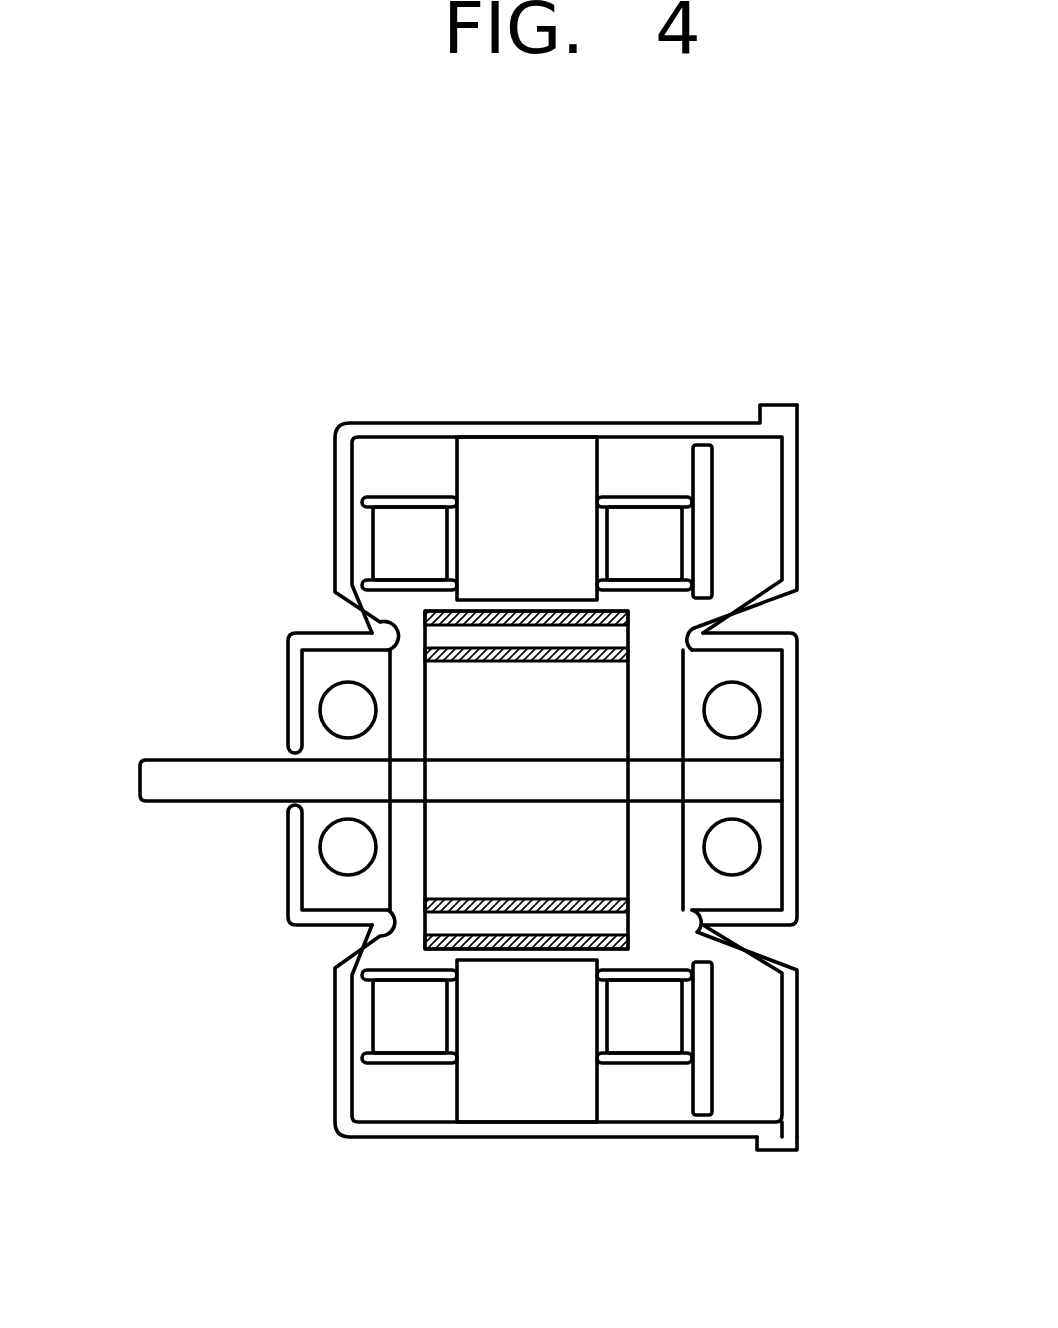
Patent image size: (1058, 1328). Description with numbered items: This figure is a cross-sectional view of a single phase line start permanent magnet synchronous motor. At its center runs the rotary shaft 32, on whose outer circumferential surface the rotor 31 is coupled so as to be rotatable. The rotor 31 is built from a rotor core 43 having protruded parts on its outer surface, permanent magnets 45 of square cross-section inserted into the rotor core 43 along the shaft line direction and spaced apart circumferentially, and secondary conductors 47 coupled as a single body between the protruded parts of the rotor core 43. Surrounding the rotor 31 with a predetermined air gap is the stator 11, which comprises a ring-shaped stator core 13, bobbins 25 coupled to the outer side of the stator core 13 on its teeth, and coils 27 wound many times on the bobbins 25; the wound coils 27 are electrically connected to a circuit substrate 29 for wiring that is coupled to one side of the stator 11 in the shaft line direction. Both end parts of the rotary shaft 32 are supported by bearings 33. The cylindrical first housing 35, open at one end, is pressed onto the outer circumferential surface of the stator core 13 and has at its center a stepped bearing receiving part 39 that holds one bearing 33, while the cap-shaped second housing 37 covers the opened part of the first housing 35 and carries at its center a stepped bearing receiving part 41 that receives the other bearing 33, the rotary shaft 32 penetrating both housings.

The stator 11 is at (527, 423).
The stator core 13 is at (500, 500).
The bobbin 25 is at (425, 500).
The coil 27 is at (400, 537).
The circuit substrate 29 is at (703, 462).
The rotor 31 is at (399, 858).
The rotary shaft 32 is at (140, 778).
The bearing 33 is at (315, 878).
The first housing 35 is at (660, 1125).
The second housing 37 is at (785, 1138).
The bearing receiving part 39 is at (305, 703).
The bearing receiving part 41 is at (777, 700).
The rotor core 43 is at (442, 877).
The permanent magnet 45 is at (425, 912).
The secondary conductor 47 is at (445, 948).